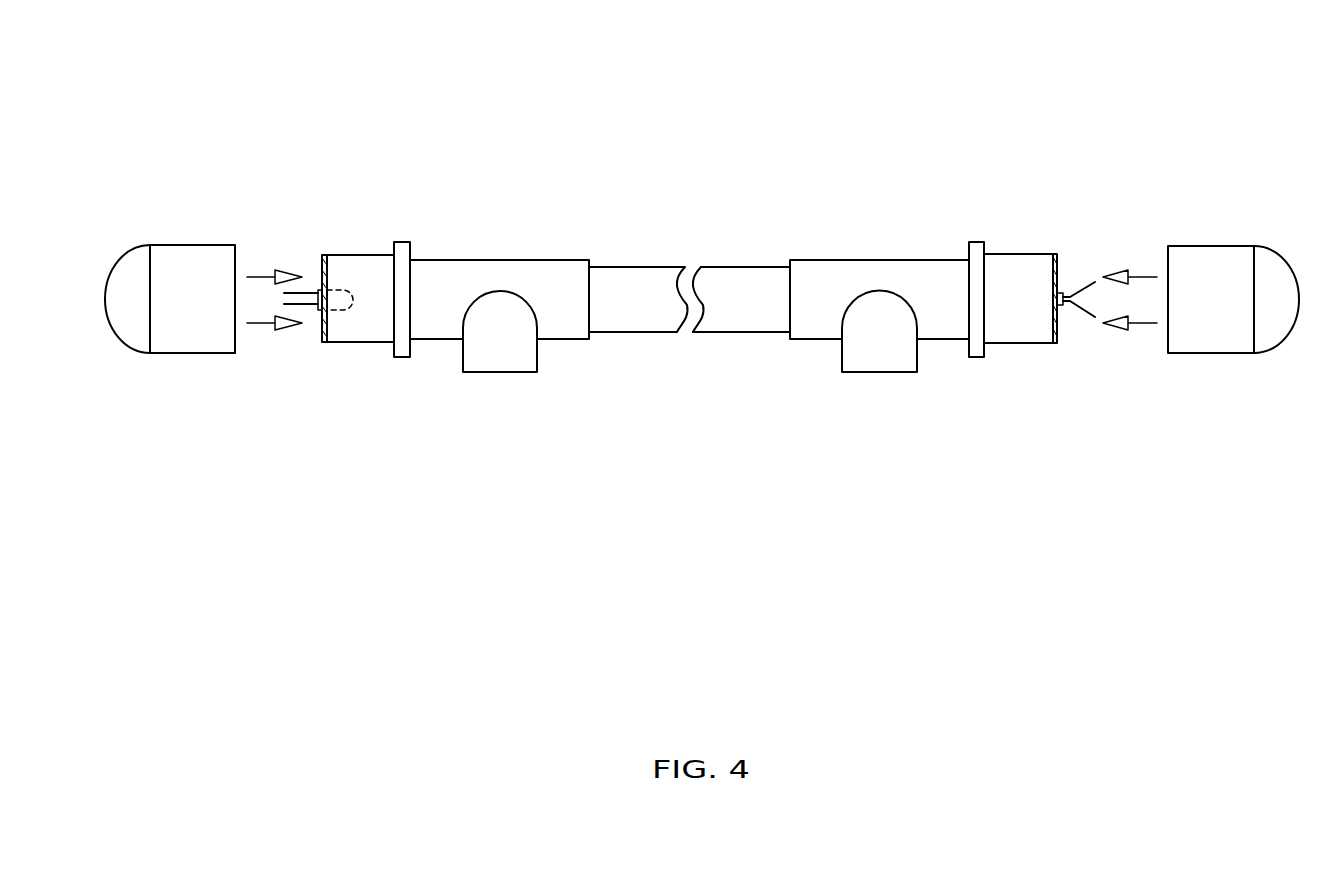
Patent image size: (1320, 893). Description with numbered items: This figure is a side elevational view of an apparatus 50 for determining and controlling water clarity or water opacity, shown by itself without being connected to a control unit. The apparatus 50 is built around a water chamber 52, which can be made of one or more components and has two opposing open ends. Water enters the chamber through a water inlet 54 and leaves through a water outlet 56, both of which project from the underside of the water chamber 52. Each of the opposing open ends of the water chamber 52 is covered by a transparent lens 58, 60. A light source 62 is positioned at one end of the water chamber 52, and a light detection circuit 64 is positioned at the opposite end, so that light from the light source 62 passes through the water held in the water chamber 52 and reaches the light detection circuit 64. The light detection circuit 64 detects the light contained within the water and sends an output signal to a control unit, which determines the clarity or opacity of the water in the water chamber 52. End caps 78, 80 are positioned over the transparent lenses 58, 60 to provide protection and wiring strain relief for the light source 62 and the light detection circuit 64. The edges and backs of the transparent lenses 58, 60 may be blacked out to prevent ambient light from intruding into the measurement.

The apparatus 50 is at (693, 75).
The water chamber 52 is at (547, 260).
The water inlet 54 is at (862, 373).
The water outlet 56 is at (879, 332).
The transparent lens 58 is at (402, 357).
The transparent lens 60 is at (978, 357).
The light source 62 is at (337, 293).
The light detection circuit 64 is at (1063, 294).
The end cap 78 is at (190, 263).
The end cap 80 is at (1213, 263).